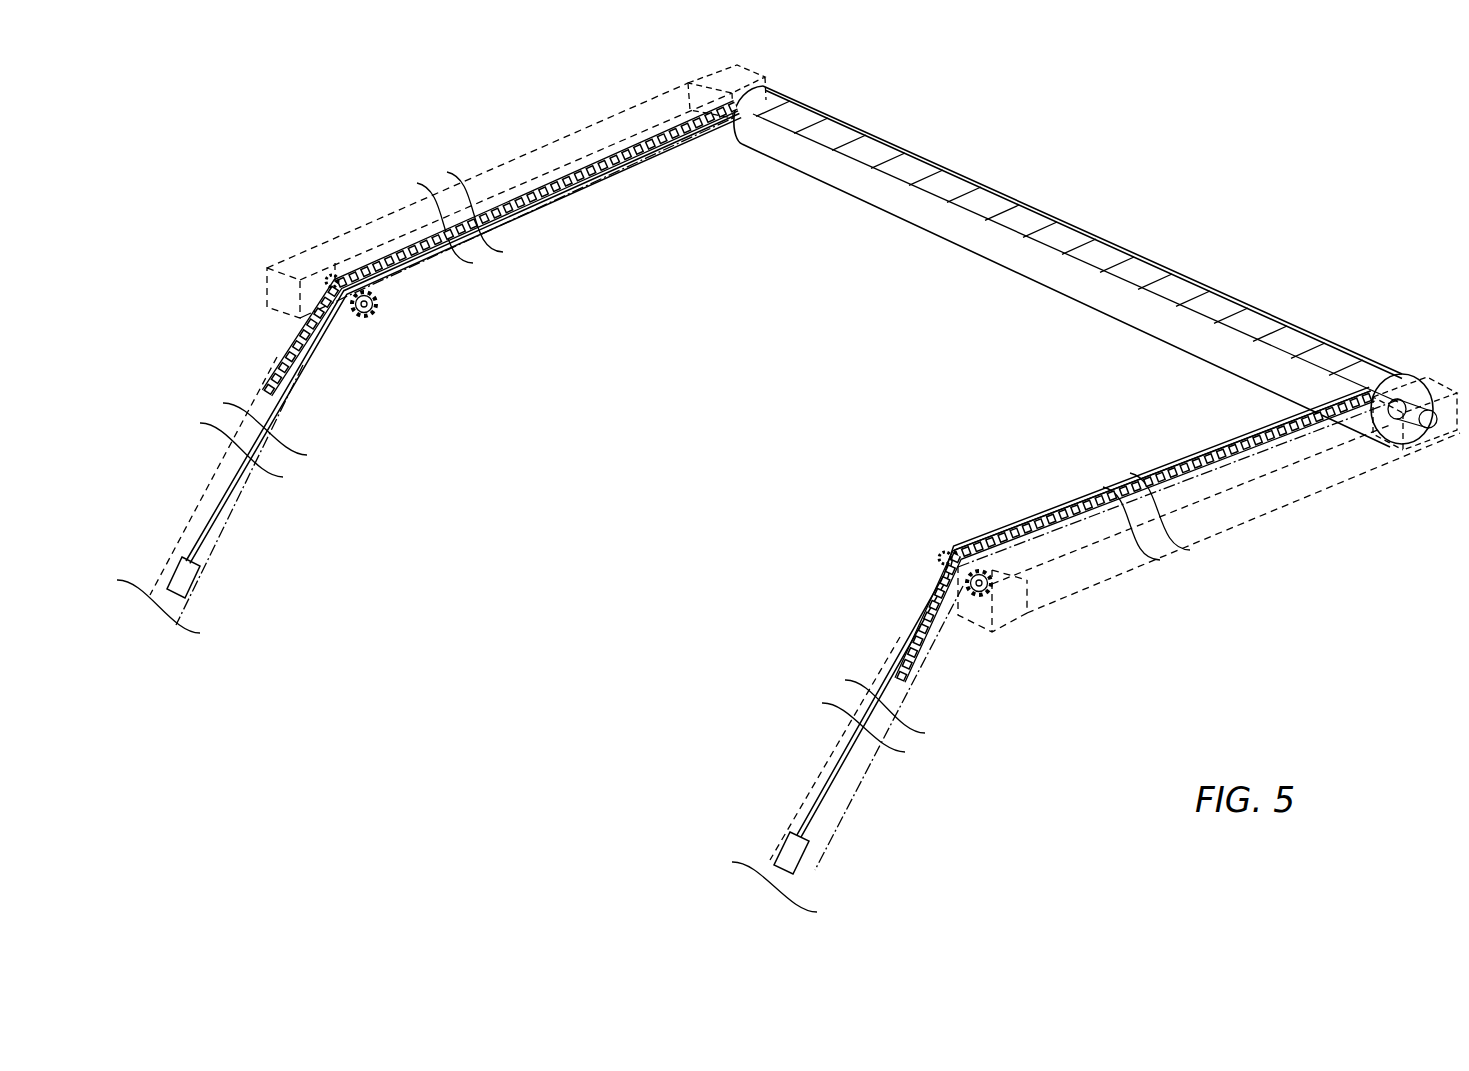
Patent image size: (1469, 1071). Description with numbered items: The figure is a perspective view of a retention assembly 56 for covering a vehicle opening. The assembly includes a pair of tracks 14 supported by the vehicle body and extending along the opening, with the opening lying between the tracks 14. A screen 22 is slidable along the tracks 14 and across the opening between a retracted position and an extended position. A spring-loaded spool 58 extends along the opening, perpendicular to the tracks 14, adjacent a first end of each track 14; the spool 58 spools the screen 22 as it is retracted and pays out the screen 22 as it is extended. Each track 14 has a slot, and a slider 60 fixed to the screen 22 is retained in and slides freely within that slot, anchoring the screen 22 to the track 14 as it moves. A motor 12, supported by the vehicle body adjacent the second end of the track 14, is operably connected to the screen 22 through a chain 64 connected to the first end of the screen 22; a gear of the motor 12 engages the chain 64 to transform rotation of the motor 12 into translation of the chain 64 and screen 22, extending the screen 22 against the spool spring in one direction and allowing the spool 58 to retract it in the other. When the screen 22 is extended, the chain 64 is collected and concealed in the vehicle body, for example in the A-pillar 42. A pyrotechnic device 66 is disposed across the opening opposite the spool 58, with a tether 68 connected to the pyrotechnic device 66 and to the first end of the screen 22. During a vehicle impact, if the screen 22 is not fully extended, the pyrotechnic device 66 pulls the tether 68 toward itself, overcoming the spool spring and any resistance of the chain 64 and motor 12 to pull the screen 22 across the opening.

The motor 12 is at (392, 304).
The track 14 is at (530, 145).
The screen 22 is at (1013, 216).
The pillar 42 is at (200, 495).
The retention assembly 56 is at (1204, 208).
The spring-loaded spool 58 is at (848, 200).
The slider 60 is at (708, 92).
The chain 64 is at (292, 350).
The pyrotechnic device 66 is at (192, 582).
The tether 68 is at (318, 340).